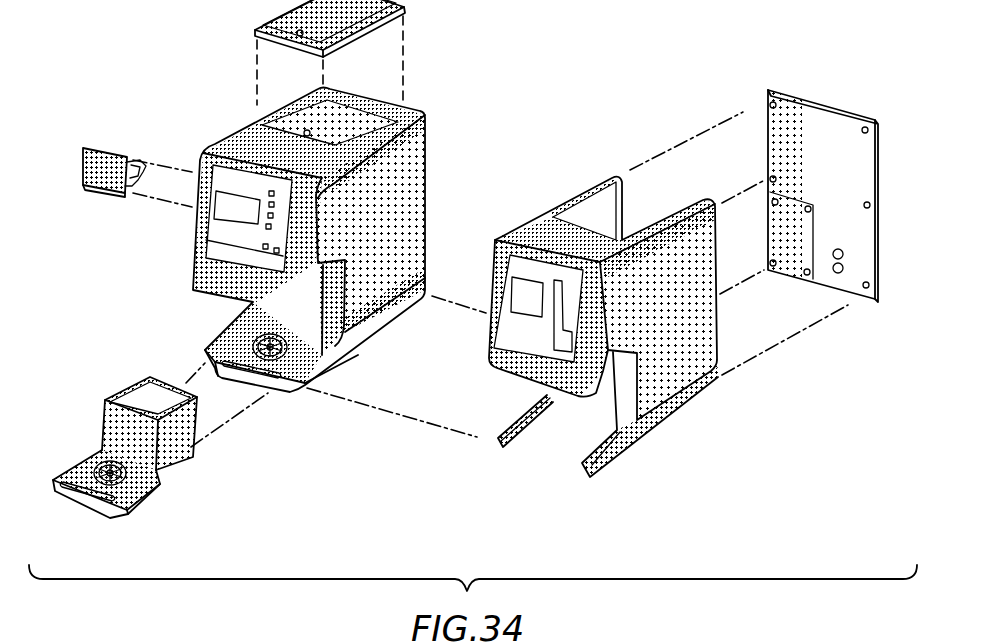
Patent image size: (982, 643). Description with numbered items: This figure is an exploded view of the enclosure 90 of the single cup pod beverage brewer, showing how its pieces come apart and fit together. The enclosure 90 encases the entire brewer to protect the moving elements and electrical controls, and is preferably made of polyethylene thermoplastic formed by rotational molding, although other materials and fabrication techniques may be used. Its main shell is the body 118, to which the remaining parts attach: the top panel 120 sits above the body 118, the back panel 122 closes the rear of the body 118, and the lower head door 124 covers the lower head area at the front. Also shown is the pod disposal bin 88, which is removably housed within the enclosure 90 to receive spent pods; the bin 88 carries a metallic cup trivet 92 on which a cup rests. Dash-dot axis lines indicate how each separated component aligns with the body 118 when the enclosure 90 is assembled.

The enclosure 90 is at (437, 207).
The top panel 120 is at (393, 20).
The lower head door 124 is at (108, 148).
The pod disposal bin 88 is at (128, 386).
The metallic cup trivet 92 is at (132, 492).
The body 118 is at (688, 412).
The back panel 122 is at (812, 97).